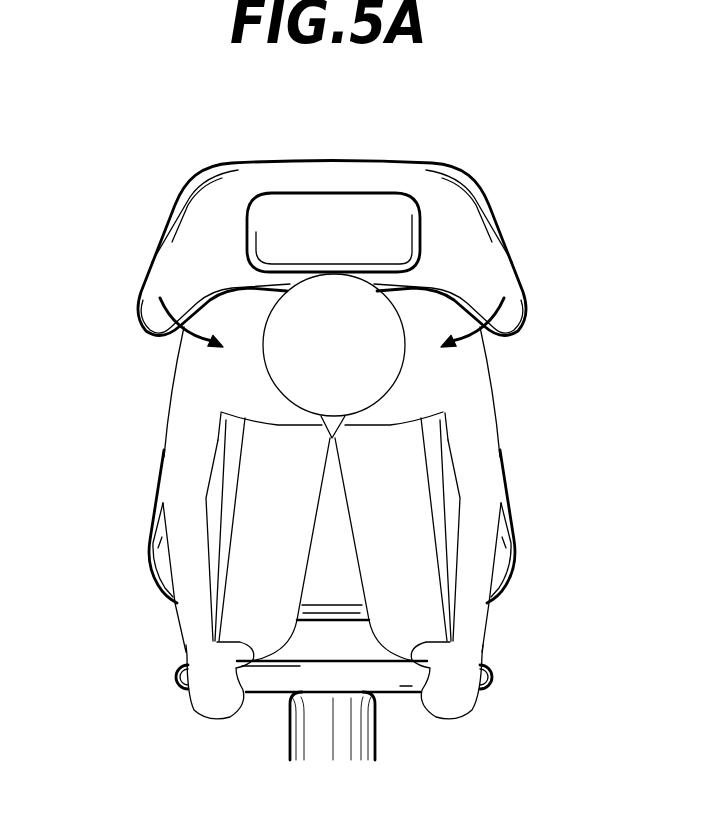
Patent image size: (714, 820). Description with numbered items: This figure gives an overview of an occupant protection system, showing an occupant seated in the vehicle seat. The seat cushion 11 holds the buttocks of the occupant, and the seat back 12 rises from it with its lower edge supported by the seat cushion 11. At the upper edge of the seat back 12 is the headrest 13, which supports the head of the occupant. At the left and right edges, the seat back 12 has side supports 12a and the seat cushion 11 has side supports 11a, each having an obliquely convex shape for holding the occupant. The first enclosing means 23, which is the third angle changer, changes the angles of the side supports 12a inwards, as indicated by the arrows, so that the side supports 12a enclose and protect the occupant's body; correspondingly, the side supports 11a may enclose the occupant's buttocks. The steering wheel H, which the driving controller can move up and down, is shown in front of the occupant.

The seat cushion 11 is at (330, 605).
The side supports 11a is at (155, 557).
The seat back 12 is at (480, 190).
The side supports 12a is at (151, 323).
The headrest 13 is at (323, 212).
The first enclosing means 23 is at (118, 323).
The steering wheel H is at (492, 682).